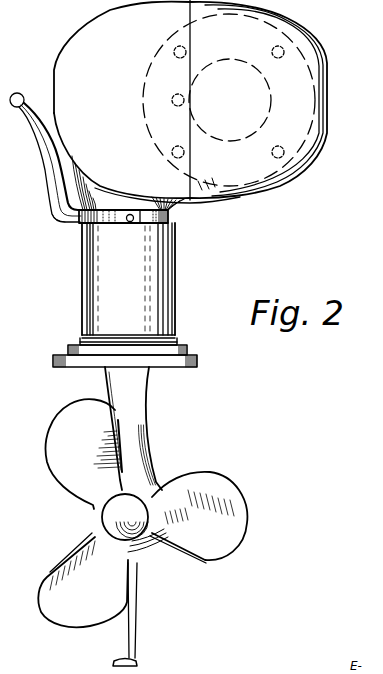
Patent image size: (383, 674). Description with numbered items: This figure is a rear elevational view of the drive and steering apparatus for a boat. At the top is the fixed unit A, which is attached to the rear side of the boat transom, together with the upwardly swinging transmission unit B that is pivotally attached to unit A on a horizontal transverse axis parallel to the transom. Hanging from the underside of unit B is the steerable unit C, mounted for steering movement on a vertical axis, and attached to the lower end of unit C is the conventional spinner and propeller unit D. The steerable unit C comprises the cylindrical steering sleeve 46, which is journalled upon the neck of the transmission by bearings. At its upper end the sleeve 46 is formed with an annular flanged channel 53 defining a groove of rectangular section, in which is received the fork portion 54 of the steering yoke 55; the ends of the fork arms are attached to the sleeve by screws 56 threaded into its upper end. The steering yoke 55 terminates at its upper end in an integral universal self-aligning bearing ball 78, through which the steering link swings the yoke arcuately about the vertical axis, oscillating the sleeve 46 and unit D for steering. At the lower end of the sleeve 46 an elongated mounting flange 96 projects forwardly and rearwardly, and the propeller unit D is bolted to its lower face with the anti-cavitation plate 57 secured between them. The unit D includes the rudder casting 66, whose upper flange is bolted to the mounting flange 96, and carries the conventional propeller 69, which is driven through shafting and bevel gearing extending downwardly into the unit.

The bearing ball 78 is at (24, 95).
The steering yoke 55 is at (48, 176).
The fork portion 54 is at (78, 223).
The screws 56 is at (128, 223).
The annular flanged channel 53 is at (170, 219).
The steering sleeve 46 is at (176, 318).
The mounting flange 96 is at (188, 350).
The anti-cavitation plate 57 is at (198, 364).
The propeller 69 is at (237, 493).
The rudder casting 66 is at (136, 627).
The fixed unit A is at (334, 53).
The upwardly swinging transmission unit B is at (62, 36).
The steerable unit C is at (157, 284).
The spinner and propeller unit D is at (158, 411).